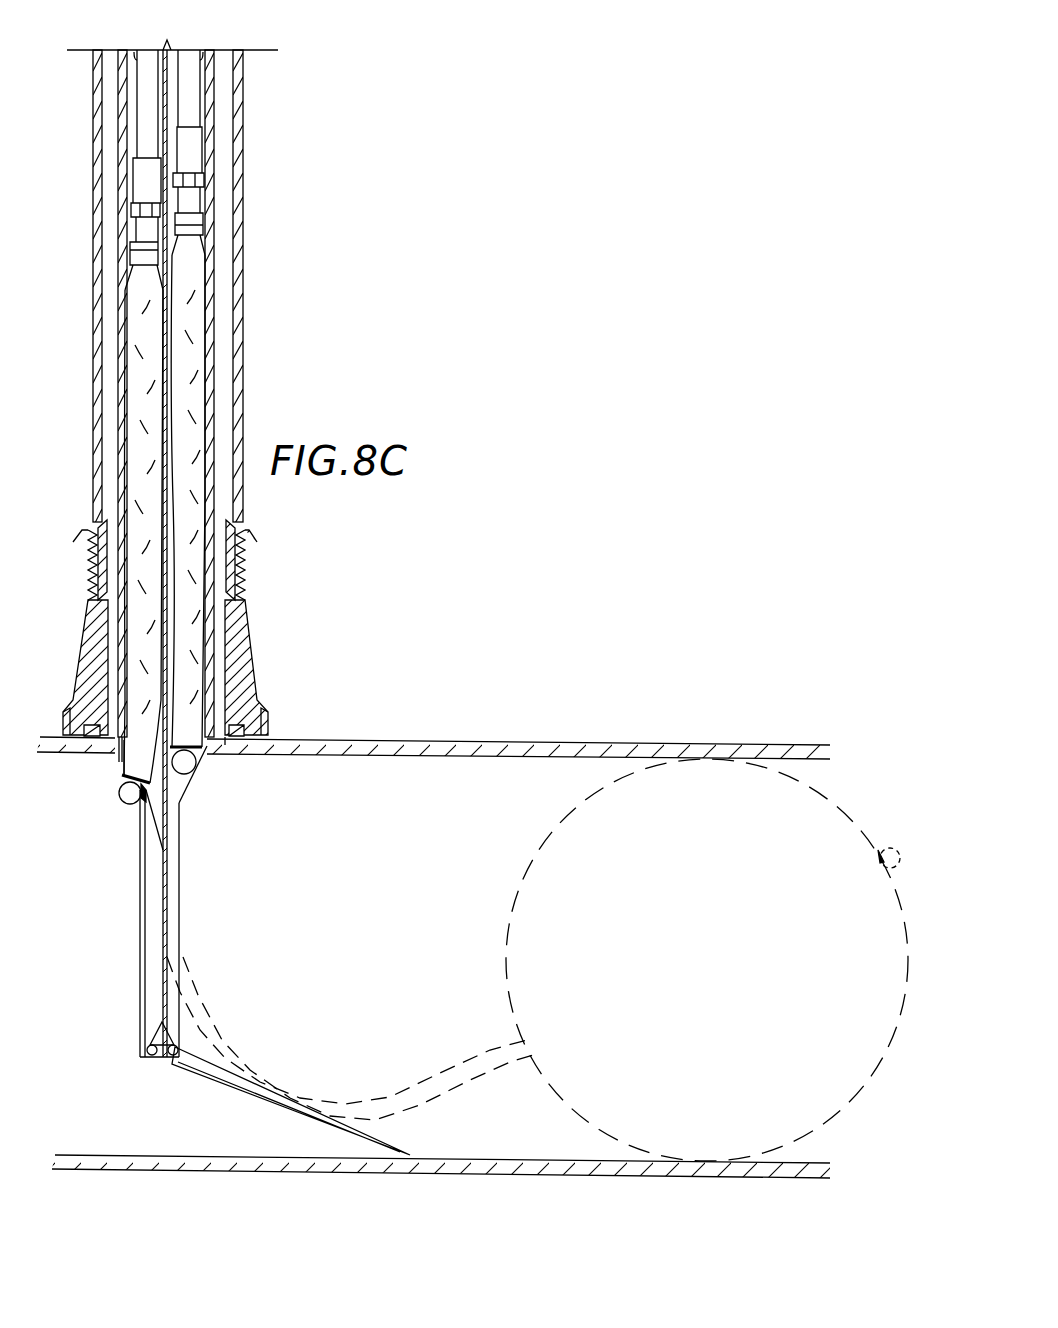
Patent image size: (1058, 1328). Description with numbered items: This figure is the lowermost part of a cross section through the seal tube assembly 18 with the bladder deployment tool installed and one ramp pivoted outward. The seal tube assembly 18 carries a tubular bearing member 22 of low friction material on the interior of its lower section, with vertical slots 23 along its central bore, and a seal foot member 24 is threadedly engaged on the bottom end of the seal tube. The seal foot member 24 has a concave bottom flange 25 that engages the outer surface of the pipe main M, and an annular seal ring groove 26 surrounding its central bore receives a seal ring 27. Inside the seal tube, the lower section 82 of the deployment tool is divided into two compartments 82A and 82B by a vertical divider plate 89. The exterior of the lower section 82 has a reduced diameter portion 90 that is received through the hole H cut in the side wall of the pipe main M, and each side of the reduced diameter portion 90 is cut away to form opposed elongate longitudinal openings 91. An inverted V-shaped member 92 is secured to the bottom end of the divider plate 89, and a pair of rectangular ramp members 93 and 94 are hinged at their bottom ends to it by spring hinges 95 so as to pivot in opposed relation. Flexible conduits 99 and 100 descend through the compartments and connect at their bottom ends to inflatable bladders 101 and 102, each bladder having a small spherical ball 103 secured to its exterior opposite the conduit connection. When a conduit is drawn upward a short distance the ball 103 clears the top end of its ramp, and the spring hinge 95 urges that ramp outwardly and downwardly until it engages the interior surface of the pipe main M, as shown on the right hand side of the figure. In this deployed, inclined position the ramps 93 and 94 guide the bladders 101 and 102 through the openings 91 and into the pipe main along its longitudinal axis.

The seal tube assembly 18 is at (249, 224).
The tubular bearing member 22 is at (228, 560).
The vertical slots 23 is at (166, 565).
The seal foot member 24 is at (258, 630).
The concave bottom flange 25 is at (259, 738).
The annular seal ring groove 26 is at (234, 722).
The seal ring 27 is at (237, 742).
The lower section 82 is at (215, 386).
The compartment 82A is at (133, 118).
The compartment 82B is at (205, 112).
The vertical divider plate 89 is at (172, 340).
The reduced diameter portion 90 is at (110, 750).
The elongate longitudinal openings 91 is at (138, 807).
The inverted V-shaped member 92 is at (157, 1035).
The ramp member 93 is at (141, 931).
The ramp member 94 is at (223, 1085).
The spring hinge 95 is at (187, 1045).
The flexible conduit 99 is at (134, 58).
The flexible conduit 100 is at (205, 58).
The inflatable bladder 101 is at (140, 397).
The inflatable bladder 102 is at (195, 455).
The spherical ball 103 is at (118, 793).
The hole H is at (209, 780).
The pipe main M is at (458, 740).